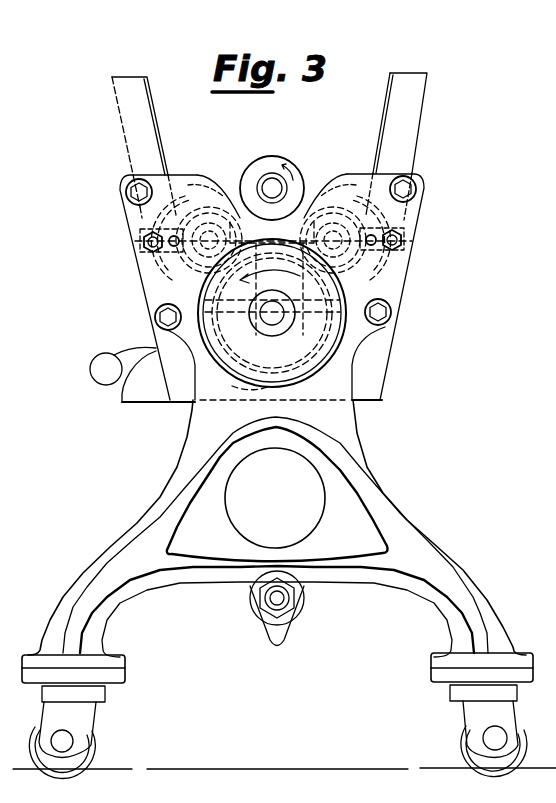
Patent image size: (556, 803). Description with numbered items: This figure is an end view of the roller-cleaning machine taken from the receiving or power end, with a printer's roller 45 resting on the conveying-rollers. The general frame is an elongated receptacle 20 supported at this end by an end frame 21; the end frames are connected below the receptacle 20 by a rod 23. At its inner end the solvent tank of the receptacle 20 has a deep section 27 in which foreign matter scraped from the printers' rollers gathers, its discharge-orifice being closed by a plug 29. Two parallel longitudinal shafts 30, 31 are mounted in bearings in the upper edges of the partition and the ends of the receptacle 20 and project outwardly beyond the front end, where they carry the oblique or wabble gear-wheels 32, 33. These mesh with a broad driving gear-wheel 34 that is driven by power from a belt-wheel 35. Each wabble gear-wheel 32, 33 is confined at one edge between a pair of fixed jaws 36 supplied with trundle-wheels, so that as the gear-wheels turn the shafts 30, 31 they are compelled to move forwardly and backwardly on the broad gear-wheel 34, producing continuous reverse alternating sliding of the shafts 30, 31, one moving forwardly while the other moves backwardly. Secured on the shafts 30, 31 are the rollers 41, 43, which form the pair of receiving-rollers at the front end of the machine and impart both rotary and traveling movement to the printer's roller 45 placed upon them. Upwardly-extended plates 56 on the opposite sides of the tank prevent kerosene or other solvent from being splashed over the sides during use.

The receptacle 20 is at (383, 287).
The end frame 21 is at (352, 442).
The rod 23 is at (280, 600).
The deep section 27 is at (380, 390).
The plug 29 is at (105, 377).
The shaft 30 is at (337, 248).
The shaft 31 is at (197, 250).
The wabble gear-wheel 32 is at (312, 187).
The wabble gear-wheel 33 is at (233, 183).
The driving gear-wheel 34 is at (300, 360).
The belt-wheel 35 is at (243, 380).
The fixed jaws 36 is at (143, 232).
The receiving-roller 41 is at (367, 277).
The receiving-roller 43 is at (183, 263).
The printer's roller 45 is at (266, 157).
The upwardly-extended plates 56 is at (135, 130).